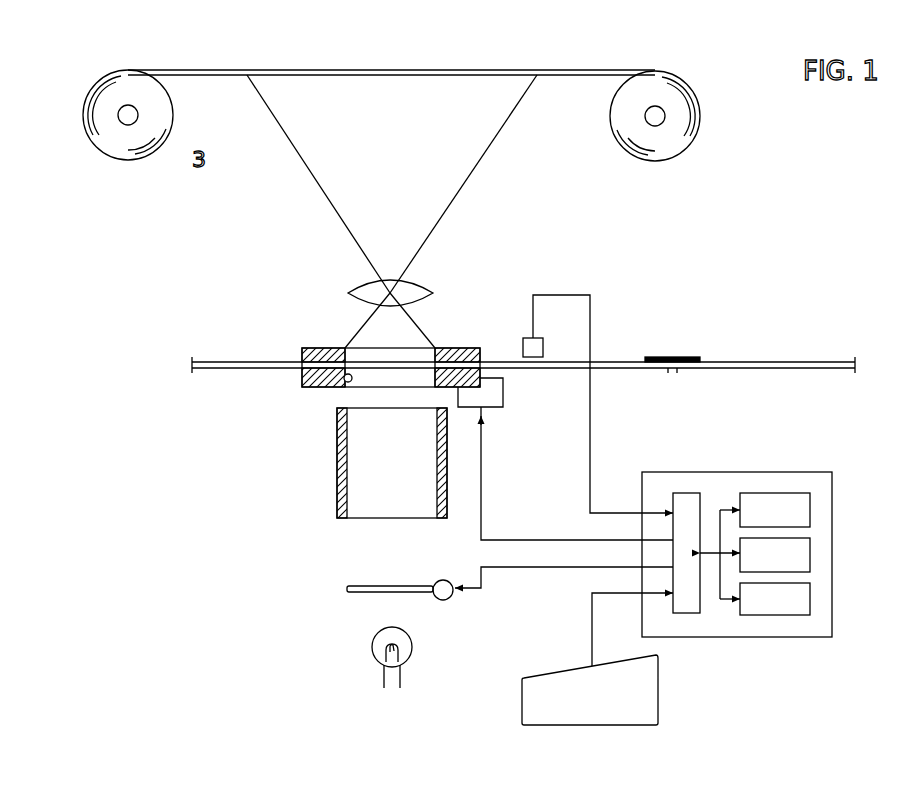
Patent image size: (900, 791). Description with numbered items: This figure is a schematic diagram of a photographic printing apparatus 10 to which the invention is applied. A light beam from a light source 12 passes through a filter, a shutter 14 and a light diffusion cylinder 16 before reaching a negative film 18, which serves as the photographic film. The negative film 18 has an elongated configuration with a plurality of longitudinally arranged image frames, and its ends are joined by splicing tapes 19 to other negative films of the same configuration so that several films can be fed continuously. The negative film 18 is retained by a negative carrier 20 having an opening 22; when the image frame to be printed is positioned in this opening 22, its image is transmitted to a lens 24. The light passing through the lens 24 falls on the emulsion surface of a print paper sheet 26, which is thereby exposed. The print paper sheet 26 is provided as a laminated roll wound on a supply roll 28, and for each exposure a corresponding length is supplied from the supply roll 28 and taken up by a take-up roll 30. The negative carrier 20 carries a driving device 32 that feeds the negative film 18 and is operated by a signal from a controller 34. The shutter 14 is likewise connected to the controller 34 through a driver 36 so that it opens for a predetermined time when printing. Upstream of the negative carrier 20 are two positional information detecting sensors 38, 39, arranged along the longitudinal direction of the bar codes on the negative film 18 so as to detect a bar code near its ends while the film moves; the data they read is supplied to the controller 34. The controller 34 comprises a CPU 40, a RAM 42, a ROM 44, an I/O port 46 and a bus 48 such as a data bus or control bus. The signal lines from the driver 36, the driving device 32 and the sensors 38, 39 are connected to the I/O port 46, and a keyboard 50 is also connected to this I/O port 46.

The optical reading apparatus 10 is at (767, 202).
The light source 12 is at (372, 646).
The shutter 14 is at (367, 586).
The light diffusion cylinder 16 is at (337, 472).
The negative film 18 is at (230, 360).
The splicing tape 19 is at (693, 357).
The negative carrier 20 is at (462, 347).
The opening 22 is at (350, 380).
The lens 24 is at (430, 287).
The print paper sheet 26 is at (226, 70).
The supply roll 28 is at (657, 126).
The take-up roll 30 is at (128, 125).
The driving device 32 is at (503, 393).
The controller 34 is at (786, 472).
The driver 36 is at (452, 600).
The positional information detecting sensor 38 is at (527, 337).
The positional information detecting sensor 39 is at (533, 347).
The CPU 40 is at (810, 555).
The RAM 42 is at (810, 510).
The ROM 44 is at (810, 598).
The I/O port 46 is at (688, 493).
The bus 48 is at (719, 592).
The keyboard 50 is at (522, 700).